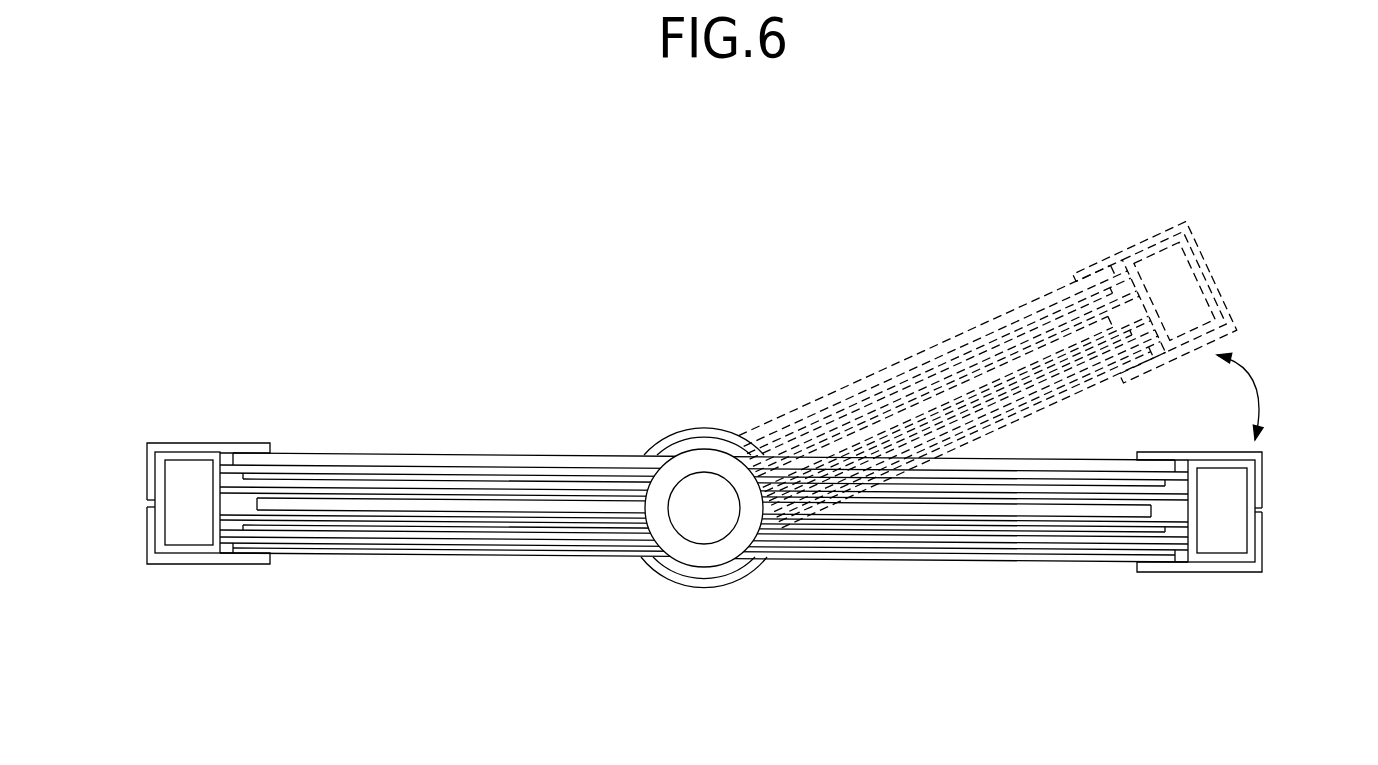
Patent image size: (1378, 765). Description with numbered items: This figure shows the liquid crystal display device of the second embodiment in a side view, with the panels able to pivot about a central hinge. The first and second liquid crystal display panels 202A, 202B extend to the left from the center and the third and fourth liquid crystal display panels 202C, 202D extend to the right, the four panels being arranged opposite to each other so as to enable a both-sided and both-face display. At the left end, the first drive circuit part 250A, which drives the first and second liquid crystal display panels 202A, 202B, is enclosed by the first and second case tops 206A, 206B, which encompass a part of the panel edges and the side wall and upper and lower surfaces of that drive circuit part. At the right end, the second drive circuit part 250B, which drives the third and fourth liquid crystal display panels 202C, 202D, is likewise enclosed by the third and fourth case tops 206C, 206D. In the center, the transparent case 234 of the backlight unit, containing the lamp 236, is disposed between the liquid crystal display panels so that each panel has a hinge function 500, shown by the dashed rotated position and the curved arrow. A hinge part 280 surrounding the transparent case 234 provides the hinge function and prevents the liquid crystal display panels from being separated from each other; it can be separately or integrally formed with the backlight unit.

The first liquid crystal display panel 202A is at (323, 467).
The second liquid crystal display panel 202B is at (323, 540).
The third liquid crystal display panel 202C is at (1123, 475).
The fourth liquid crystal display panel 202D is at (1038, 547).
The first case top 206A is at (148, 455).
The second case top 206B is at (148, 533).
The third case top 206C is at (1257, 465).
The fourth case top 206D is at (1258, 543).
The first drive circuit part 250A is at (188, 522).
The second drive circuit part 250B is at (1222, 527).
The hinge part 280 is at (662, 438).
The transparent case 234 is at (707, 460).
The lamp 236 is at (700, 525).
The hinge function 500 is at (1252, 385).